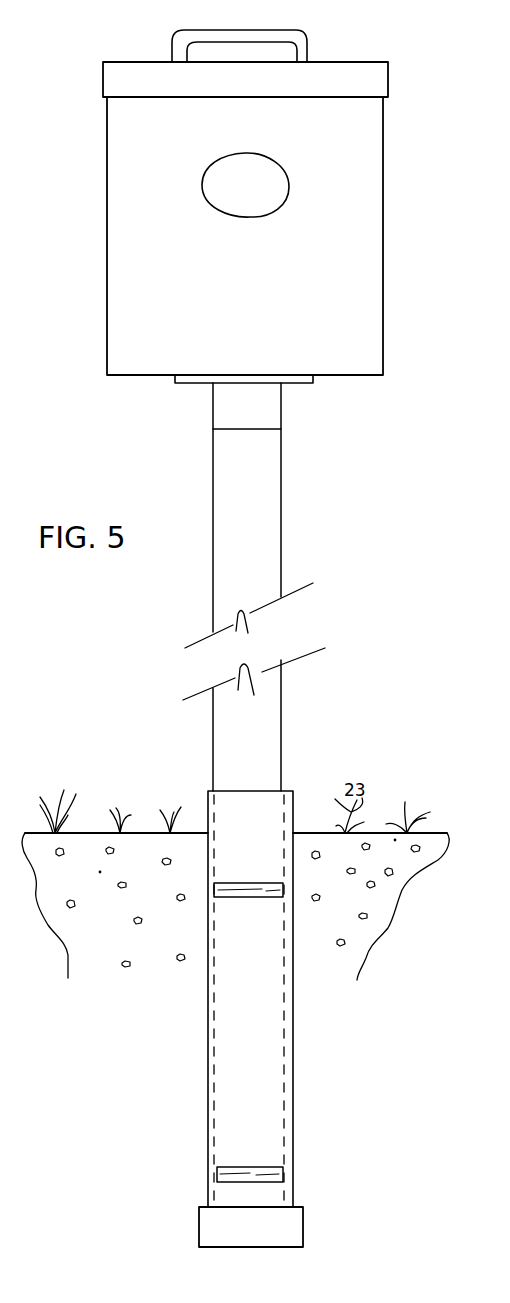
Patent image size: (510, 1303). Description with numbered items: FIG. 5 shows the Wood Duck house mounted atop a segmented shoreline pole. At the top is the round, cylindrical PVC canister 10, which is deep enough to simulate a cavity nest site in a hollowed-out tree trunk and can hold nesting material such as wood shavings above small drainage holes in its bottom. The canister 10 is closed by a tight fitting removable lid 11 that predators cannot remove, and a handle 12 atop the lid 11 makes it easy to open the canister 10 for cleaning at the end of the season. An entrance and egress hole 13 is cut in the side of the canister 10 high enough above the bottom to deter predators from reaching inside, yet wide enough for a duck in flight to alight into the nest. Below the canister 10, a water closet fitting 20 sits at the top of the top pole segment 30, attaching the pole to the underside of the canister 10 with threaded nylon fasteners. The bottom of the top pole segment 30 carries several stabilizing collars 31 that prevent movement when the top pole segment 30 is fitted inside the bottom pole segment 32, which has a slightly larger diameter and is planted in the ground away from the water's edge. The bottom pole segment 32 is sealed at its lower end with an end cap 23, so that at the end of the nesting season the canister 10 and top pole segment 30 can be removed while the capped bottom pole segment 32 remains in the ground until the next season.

The canister 10 is at (285, 278).
The lid 11 is at (370, 75).
The handle 12 is at (290, 35).
The entrance hole 13 is at (262, 197).
The water closet fitting 20 is at (257, 416).
The top pole segment 30 is at (250, 509).
The stabilizing collars 31 is at (282, 1177).
The bottom pole segment 32 is at (250, 823).
The end cap 23 is at (303, 1233).